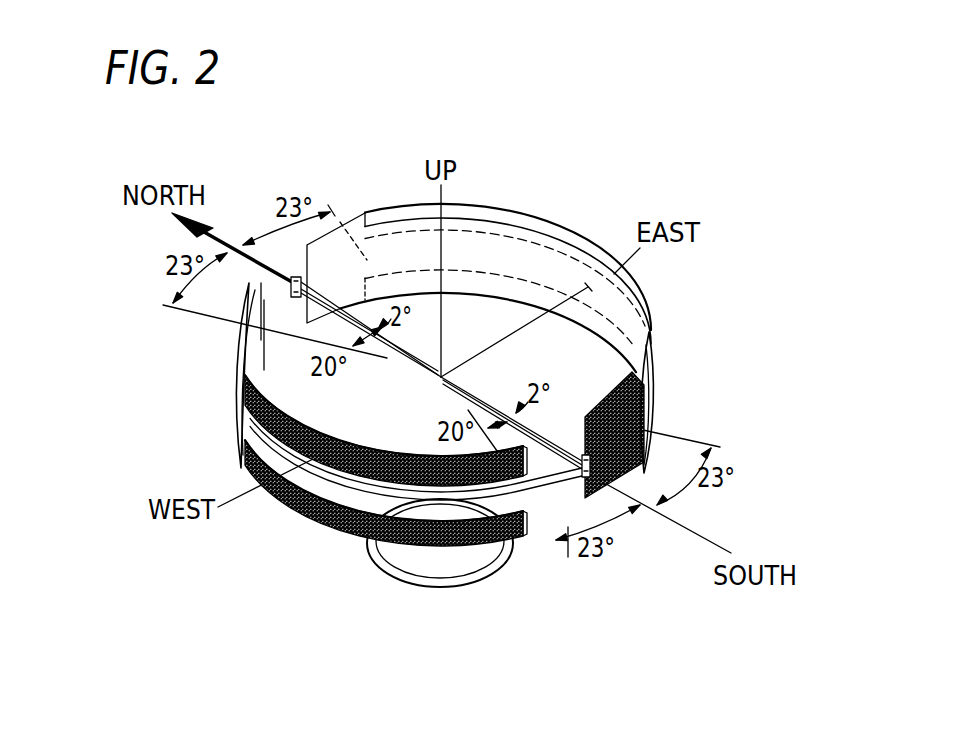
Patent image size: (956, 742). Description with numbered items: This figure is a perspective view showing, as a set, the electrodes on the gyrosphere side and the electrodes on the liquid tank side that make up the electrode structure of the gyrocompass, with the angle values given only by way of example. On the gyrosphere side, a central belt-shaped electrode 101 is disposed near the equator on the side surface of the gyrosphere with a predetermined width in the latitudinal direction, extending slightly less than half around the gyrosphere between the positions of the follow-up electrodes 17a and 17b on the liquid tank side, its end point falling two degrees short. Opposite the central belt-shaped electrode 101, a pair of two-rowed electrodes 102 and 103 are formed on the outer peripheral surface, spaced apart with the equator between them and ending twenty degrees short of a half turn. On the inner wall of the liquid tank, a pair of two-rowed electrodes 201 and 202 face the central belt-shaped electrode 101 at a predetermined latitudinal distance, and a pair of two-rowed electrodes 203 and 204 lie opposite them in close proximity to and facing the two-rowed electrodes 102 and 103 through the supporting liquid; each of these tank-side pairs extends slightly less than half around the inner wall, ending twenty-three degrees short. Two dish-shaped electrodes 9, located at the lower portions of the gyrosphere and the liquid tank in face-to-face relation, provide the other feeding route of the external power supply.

The dish-shaped electrode 9 is at (447, 565).
The follow-up electrode 17a is at (291, 282).
The follow-up electrode 17b is at (588, 477).
The central belt-shaped electrode 101 is at (643, 450).
The two-rowed electrode 102 is at (525, 450).
The two-rowed electrode 103 is at (525, 518).
The two-rowed electrode 201 is at (645, 372).
The two-rowed electrode 202 is at (645, 445).
The two-rowed electrode 203 is at (327, 452).
The two-rowed electrode 204 is at (340, 520).